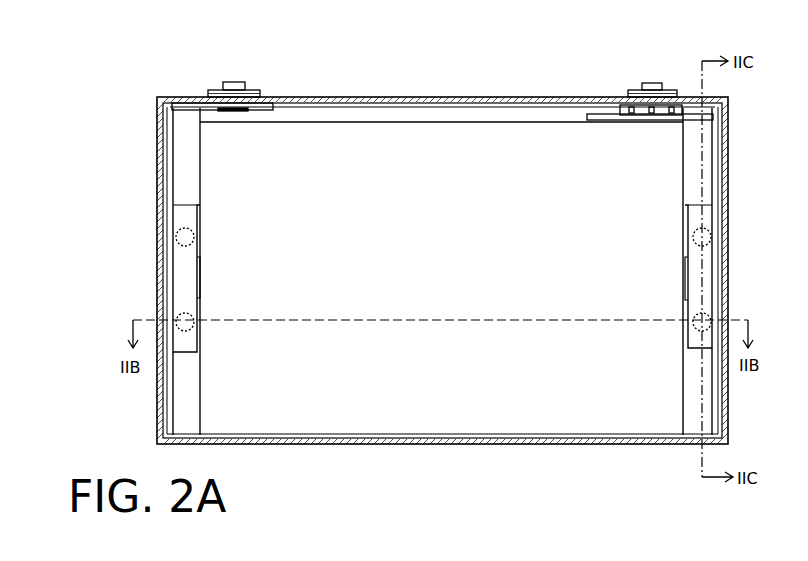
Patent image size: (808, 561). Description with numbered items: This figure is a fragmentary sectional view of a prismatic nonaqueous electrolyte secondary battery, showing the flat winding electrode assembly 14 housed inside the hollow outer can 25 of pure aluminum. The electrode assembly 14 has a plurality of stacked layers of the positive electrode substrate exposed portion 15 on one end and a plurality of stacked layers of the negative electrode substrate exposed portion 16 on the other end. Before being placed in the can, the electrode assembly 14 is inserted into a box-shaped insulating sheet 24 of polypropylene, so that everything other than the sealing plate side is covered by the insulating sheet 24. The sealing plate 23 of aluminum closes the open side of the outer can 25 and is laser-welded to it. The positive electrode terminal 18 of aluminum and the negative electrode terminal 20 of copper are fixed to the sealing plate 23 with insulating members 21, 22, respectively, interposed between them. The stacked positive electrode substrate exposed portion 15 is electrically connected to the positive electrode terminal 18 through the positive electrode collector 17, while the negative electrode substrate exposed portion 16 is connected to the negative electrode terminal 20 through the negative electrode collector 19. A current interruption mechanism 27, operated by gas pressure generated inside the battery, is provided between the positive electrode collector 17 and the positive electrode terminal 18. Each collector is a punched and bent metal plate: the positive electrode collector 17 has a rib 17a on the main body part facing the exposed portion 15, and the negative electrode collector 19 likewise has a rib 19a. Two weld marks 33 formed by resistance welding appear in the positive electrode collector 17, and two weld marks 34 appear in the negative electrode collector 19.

The flat winding electrode assembly 14 is at (472, 385).
The positive electrode substrate exposed portion 15 is at (705, 413).
The negative electrode substrate exposed portion 16 is at (181, 415).
The positive electrode collector 17 is at (707, 175).
The rib 17a is at (690, 240).
The positive electrode terminal 18 is at (648, 84).
The negative electrode collector 19 is at (177, 217).
The rib 19a is at (200, 219).
The negative electrode terminal 20 is at (232, 87).
The insulating member 21 is at (634, 92).
The insulating member 22 is at (266, 118).
The sealing plate 23 is at (483, 97).
The insulating sheet 24 is at (550, 437).
The hollow outer can 25 is at (632, 442).
The current interruption mechanism 27 is at (640, 110).
The weld marks 33 is at (692, 317).
The weld marks 34 is at (198, 248).